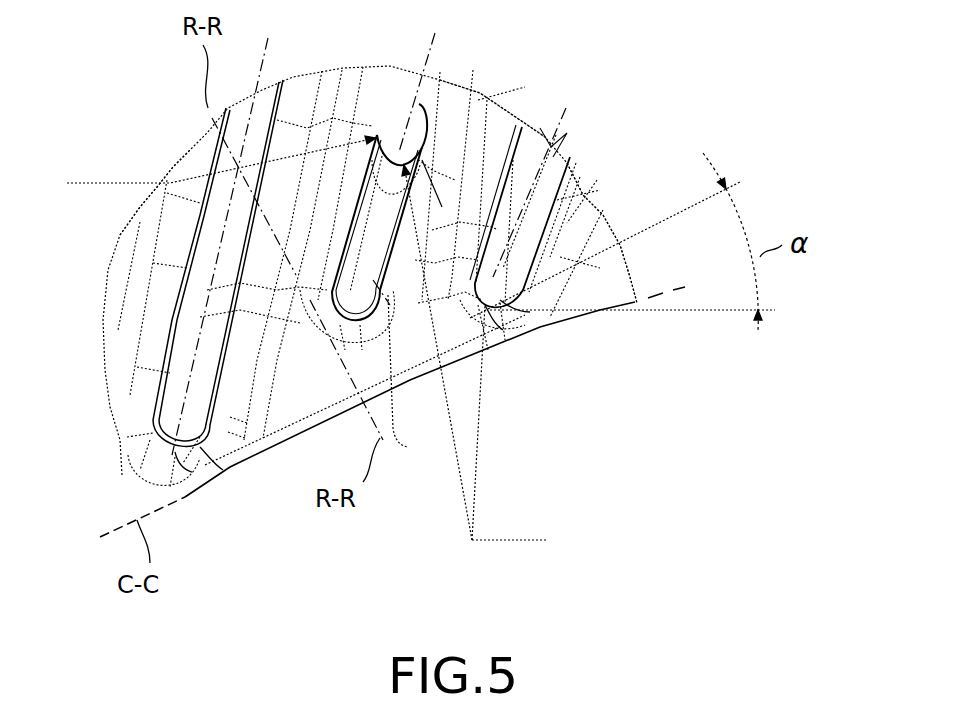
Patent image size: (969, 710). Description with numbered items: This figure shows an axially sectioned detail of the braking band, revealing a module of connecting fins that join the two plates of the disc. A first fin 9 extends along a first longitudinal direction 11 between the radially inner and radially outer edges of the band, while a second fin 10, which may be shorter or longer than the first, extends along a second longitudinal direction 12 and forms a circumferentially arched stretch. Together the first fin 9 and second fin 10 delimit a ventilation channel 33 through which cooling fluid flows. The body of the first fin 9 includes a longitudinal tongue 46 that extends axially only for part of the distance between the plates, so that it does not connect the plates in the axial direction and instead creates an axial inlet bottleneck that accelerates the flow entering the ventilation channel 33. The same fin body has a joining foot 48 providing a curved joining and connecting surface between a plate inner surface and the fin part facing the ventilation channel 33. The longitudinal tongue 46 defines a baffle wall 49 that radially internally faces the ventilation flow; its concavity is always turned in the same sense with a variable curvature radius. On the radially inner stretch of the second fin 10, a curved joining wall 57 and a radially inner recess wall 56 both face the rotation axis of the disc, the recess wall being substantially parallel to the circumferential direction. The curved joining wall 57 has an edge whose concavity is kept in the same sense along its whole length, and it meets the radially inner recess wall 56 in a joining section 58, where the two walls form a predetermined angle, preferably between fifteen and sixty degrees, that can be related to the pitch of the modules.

The first fin 9 is at (397, 97).
The second fin 10 is at (550, 200).
The first longitudinal direction 11 is at (428, 50).
The second longitudinal direction 12 is at (570, 110).
The ventilation channel 33 is at (483, 120).
The longitudinal tongue 46 is at (414, 379).
The joining foot 48 is at (150, 383).
The baffle wall 49 is at (377, 135).
The radially inner recess wall 56 is at (200, 450).
The curved joining wall 57 is at (157, 445).
The joining section 58 is at (190, 470).